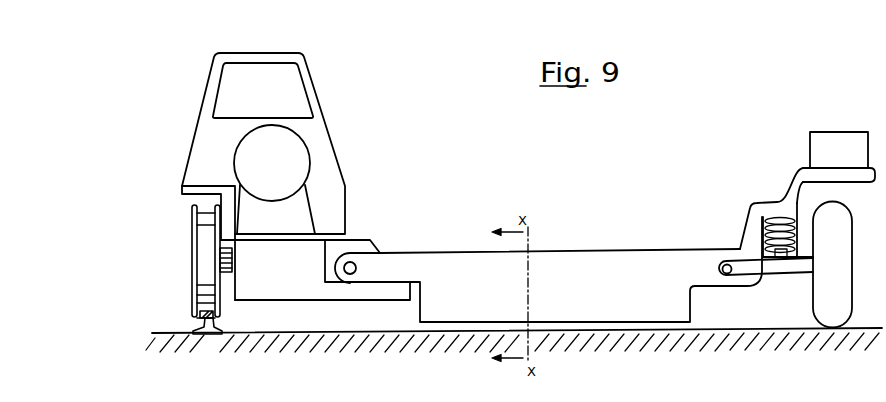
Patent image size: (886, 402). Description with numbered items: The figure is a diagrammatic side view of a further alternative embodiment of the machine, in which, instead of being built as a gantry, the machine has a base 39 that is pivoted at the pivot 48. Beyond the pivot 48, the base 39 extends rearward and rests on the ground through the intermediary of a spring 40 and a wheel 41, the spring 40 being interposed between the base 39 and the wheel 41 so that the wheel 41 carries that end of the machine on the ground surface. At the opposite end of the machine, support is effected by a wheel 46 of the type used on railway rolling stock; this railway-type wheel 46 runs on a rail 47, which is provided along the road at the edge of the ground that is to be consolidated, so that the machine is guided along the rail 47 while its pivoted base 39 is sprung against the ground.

The base 39 is at (613, 267).
The spring 40 is at (780, 227).
The wheel 41 is at (848, 247).
The wheel 46 is at (205, 265).
The rail 47 is at (209, 337).
The pivot 48 is at (353, 267).